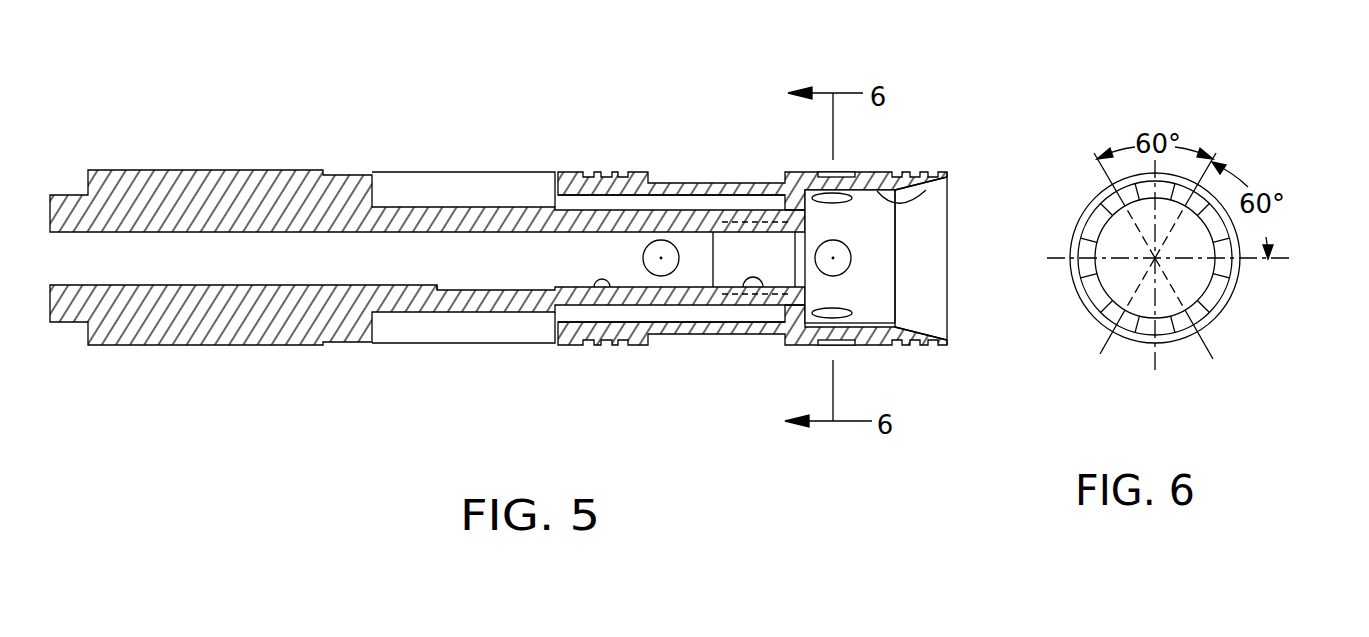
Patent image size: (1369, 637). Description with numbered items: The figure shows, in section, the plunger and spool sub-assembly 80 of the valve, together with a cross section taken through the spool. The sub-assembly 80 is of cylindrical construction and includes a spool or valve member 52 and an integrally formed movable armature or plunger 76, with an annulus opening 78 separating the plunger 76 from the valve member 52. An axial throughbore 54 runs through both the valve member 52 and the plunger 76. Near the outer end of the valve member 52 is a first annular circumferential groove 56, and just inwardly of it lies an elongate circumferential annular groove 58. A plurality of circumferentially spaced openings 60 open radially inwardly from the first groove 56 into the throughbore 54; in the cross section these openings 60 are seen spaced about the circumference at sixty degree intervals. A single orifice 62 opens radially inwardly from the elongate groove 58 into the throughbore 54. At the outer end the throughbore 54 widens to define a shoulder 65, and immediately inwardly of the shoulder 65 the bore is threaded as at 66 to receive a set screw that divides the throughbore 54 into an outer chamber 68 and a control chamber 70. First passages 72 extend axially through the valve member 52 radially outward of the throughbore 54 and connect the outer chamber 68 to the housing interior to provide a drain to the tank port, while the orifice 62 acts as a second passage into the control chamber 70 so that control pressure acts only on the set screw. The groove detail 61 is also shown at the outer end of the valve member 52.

In FIG. 5, the valve member 52 is at (908, 158).
In FIG. 5, the axial throughbore 54 is at (600, 292).
In FIG. 5, the first annular circumferential groove 56 is at (848, 170).
In FIG. 5, the elongate circumferential annular groove 58 is at (692, 334).
In FIG. 5, the circumferentially spaced openings 60 is at (850, 315).
In FIG. 6, the circumferentially spaced openings 60 is at (1117, 192).
In FIG. 5, the groove 61 is at (930, 188).
In FIG. 5, the orifice 62 is at (673, 245).
In FIG. 5, the shoulder 65 is at (850, 264).
In FIG. 5, the threads 66 is at (772, 296).
In FIG. 5, the outer chamber 68 is at (920, 295).
In FIG. 5, the control chamber 70 is at (560, 269).
In FIG. 5, the first passages 72 is at (667, 203).
In FIG. 5, the plunger 76 is at (226, 158).
In FIG. 5, the annulus opening 78 is at (440, 330).
In FIG. 5, the plunger and spool sub-assembly 80 is at (516, 150).